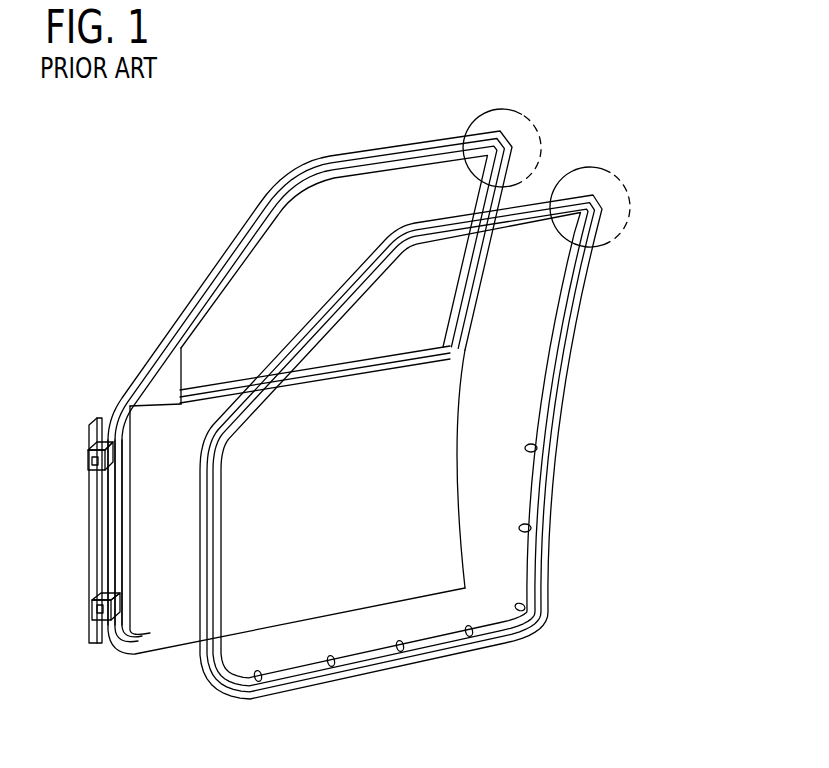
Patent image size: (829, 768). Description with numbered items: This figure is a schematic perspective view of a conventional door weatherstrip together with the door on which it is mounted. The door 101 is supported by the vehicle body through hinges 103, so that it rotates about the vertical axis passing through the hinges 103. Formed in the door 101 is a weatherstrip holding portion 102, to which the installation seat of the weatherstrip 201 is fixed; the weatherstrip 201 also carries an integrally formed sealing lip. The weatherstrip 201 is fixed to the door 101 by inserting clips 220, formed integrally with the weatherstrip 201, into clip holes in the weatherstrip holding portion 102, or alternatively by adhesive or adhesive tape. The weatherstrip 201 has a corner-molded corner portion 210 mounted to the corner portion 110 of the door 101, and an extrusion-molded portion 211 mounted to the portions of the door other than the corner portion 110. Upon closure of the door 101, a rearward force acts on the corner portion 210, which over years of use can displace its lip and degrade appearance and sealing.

The door 101 is at (326, 381).
The weatherstrip holding portion 102 is at (289, 201).
The hinges 103 is at (88, 462).
The corner portion 110 is at (512, 150).
The weatherstrip 201 is at (457, 433).
The corner portion 210 is at (602, 207).
The extrusion-molded portion 211 is at (547, 568).
The clips 220 is at (469, 626).